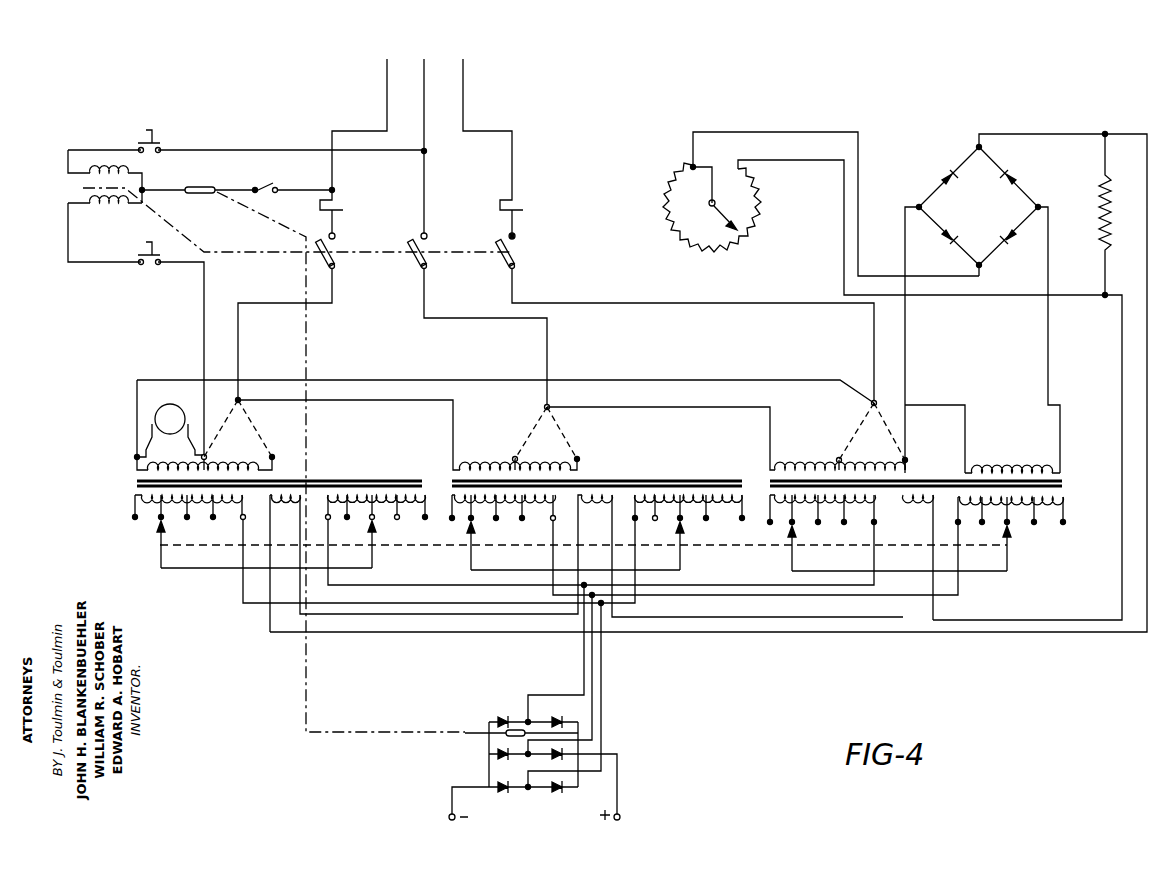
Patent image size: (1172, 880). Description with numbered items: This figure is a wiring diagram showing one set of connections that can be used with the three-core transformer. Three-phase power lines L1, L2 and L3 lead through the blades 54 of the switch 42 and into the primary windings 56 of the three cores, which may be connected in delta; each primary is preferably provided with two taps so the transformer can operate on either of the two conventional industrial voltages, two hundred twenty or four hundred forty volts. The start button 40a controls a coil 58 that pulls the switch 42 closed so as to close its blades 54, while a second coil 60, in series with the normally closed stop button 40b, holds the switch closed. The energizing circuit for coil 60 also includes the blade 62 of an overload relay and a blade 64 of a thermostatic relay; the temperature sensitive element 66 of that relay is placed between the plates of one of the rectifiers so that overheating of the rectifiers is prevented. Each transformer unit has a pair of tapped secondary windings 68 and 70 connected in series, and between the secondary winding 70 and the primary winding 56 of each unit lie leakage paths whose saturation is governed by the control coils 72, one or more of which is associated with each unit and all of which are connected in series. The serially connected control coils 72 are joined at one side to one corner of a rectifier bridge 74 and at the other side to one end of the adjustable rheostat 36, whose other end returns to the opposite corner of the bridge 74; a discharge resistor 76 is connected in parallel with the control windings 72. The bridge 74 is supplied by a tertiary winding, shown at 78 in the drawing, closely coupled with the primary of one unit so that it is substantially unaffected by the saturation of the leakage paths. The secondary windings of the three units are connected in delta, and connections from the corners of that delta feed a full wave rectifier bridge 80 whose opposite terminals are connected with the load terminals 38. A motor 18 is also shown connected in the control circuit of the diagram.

The motor 18 is at (176, 405).
The adjustable rheostat 36 is at (678, 238).
The load terminals 38 is at (452, 803).
The start button 40a is at (156, 140).
The stop button 40b is at (140, 262).
The switch 42 is at (519, 237).
The blades 54 is at (510, 252).
The primary windings 56 is at (240, 462).
The coil 58 is at (92, 178).
The second coil 60 is at (108, 204).
The blade of an overload relay 62 is at (272, 182).
The blade of a thermostatic relay 64 is at (205, 186).
The temperature sensitive element 66 is at (518, 728).
The secondary winding 68 is at (170, 498).
The secondary winding 70 is at (360, 500).
The control coils 72 is at (298, 497).
The rectifier bridge 74 is at (955, 184).
The discharge resistor 76 is at (1098, 205).
The control winding 78 is at (1000, 468).
The full wave rectifier bridge 80 is at (566, 732).
The power line L1 is at (386, 74).
The power line L2 is at (424, 64).
The power line L3 is at (464, 98).